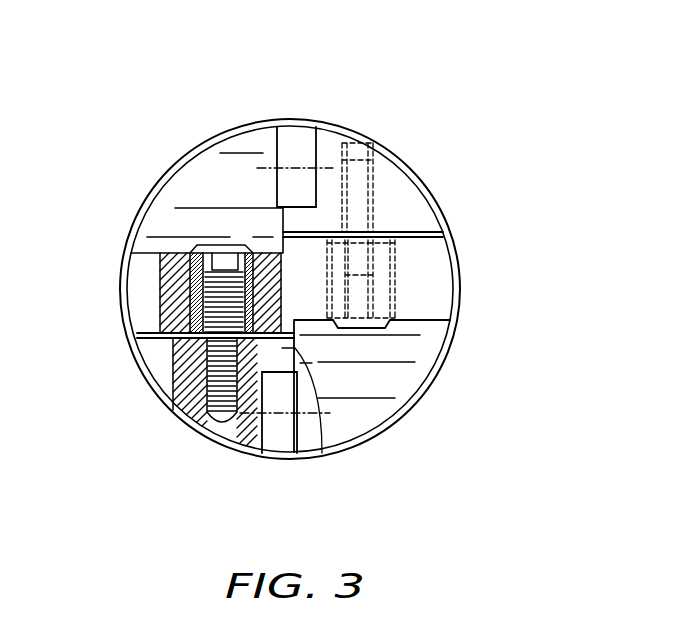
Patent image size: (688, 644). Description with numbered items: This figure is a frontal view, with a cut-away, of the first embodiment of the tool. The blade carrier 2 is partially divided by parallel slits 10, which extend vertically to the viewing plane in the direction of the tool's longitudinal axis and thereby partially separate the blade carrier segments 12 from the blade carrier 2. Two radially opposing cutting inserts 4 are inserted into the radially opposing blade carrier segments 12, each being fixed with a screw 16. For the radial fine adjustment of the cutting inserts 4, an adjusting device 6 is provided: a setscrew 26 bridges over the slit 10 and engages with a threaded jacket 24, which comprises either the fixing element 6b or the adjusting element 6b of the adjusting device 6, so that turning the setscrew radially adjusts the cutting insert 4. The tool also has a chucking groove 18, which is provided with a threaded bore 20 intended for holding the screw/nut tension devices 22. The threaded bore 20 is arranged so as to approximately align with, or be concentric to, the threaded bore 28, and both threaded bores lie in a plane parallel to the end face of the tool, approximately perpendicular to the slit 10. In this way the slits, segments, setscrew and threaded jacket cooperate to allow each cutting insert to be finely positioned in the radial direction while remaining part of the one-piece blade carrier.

The blade carrier 2 is at (428, 291).
The cutting insert 4 is at (284, 164).
The adjusting device 6 is at (386, 120).
The fixing element or adjusting element 6b is at (392, 140).
The slit 10 is at (412, 233).
The blade carrier segment 12 is at (319, 162).
The screw 16 is at (275, 143).
The chucking groove 18 is at (212, 188).
The threaded bore 20 is at (190, 255).
The screw/nut tension device 22 is at (127, 426).
The threaded jacket 24 is at (165, 300).
The setscrew 26 is at (230, 428).
The threaded bore 28 is at (240, 432).